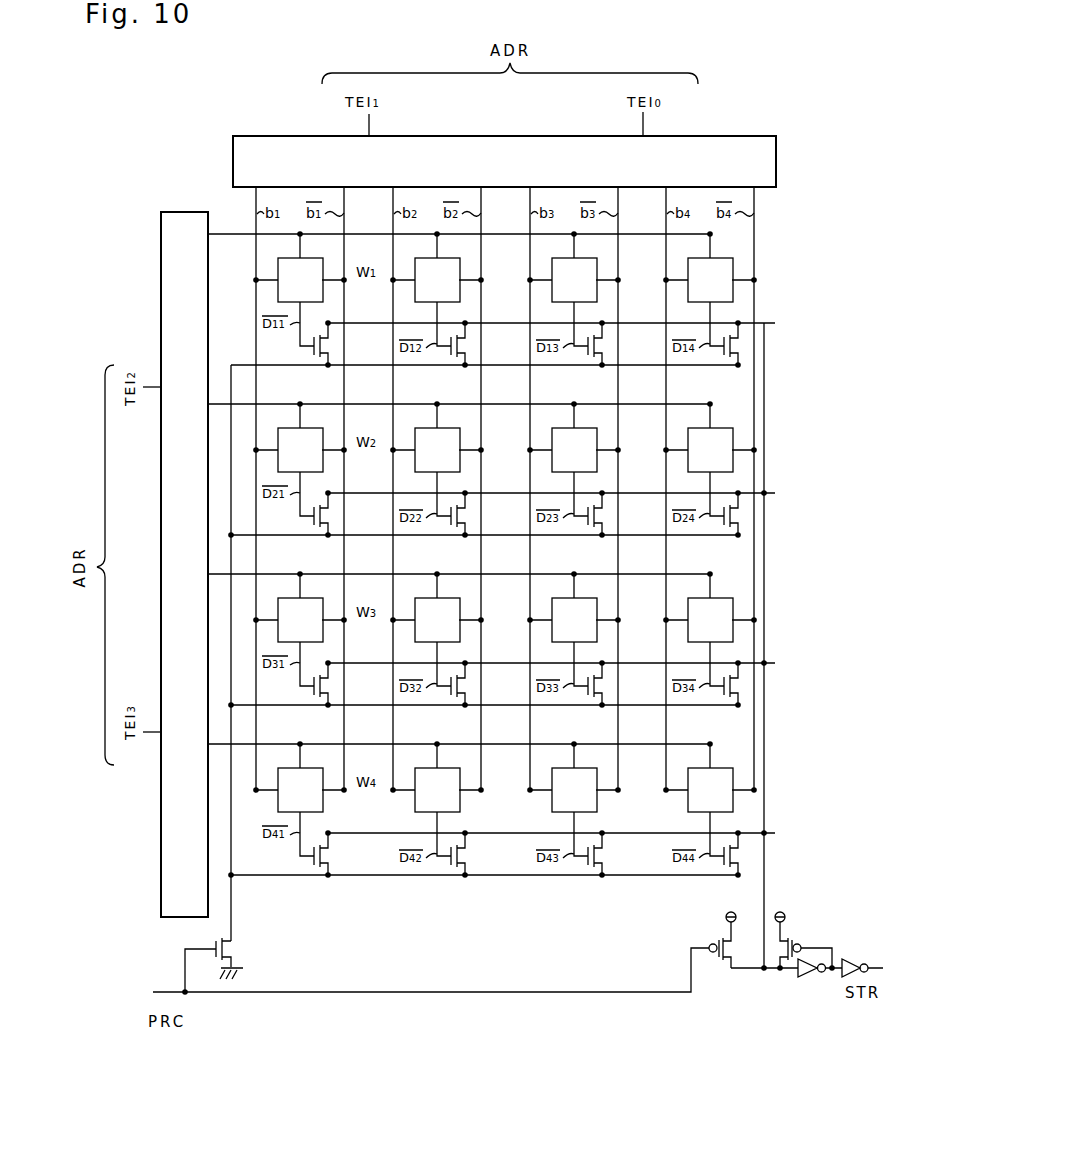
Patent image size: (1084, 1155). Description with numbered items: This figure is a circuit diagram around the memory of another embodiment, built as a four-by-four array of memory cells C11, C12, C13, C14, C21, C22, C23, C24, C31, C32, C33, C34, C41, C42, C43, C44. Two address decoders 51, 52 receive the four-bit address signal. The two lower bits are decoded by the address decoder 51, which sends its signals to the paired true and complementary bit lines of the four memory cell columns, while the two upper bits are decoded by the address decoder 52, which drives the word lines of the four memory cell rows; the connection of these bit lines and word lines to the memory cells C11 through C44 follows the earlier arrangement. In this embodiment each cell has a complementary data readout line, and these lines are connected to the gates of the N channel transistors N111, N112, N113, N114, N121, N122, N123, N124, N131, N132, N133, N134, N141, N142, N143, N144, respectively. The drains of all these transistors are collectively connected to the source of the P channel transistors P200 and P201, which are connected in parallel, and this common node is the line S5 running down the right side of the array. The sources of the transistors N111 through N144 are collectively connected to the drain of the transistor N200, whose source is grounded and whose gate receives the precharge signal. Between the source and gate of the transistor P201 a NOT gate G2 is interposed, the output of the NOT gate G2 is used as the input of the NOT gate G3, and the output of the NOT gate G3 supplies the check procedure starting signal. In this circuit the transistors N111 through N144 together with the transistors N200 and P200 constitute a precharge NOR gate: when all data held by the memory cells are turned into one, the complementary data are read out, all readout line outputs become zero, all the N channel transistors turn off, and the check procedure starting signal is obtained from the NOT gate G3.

The address decoder 51 is at (538, 136).
The address decoder 52 is at (161, 263).
The memory cell C11 is at (300, 266).
The memory cell C12 is at (437, 266).
The memory cell C13 is at (574, 266).
The memory cell C14 is at (710, 266).
The memory cell C21 is at (300, 436).
The memory cell C22 is at (437, 436).
The memory cell C23 is at (574, 436).
The memory cell C24 is at (710, 436).
The memory cell C31 is at (300, 606).
The memory cell C32 is at (437, 606).
The memory cell C33 is at (574, 606).
The memory cell C34 is at (710, 606).
The memory cell C41 is at (300, 776).
The memory cell C42 is at (437, 776).
The memory cell C43 is at (574, 776).
The memory cell C44 is at (710, 776).
The N channel transistor N111 is at (318, 358).
The N channel transistor N112 is at (455, 358).
The N channel transistor N113 is at (592, 358).
The N channel transistor N114 is at (728, 358).
The N channel transistor N121 is at (318, 528).
The N channel transistor N122 is at (455, 528).
The N channel transistor N123 is at (592, 528).
The N channel transistor N124 is at (728, 528).
The N channel transistor N131 is at (318, 698).
The N channel transistor N132 is at (455, 698).
The N channel transistor N133 is at (592, 698).
The N channel transistor N134 is at (728, 698).
The N channel transistor N141 is at (318, 868).
The N channel transistor N142 is at (455, 868).
The N channel transistor N143 is at (592, 868).
The N channel transistor N144 is at (728, 868).
The transistor N200 is at (240, 955).
The P channel transistor P200 is at (709, 946).
The P channel transistor P201 is at (798, 936).
The NOT gate G2 is at (808, 981).
The NOT gate G3 is at (855, 960).
The sense line S5 is at (785, 645).